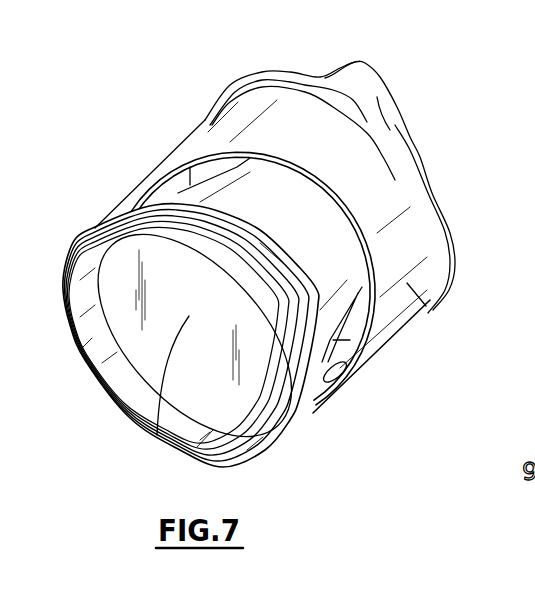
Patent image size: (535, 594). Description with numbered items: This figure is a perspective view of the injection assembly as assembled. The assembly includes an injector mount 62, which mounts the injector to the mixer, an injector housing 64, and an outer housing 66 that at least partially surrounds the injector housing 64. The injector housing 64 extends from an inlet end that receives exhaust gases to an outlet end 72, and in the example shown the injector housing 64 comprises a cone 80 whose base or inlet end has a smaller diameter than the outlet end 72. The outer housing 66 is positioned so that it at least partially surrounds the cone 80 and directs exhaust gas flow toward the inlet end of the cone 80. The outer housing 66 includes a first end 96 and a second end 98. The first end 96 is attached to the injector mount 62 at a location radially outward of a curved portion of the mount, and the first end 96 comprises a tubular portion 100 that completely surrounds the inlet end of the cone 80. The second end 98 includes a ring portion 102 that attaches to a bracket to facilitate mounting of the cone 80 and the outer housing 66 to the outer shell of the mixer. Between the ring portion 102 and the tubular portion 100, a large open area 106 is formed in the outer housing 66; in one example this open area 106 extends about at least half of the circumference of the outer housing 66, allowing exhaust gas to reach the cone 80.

The injector mount 62 is at (380, 123).
The injector housing 64 is at (333, 265).
The outer housing 66 is at (183, 142).
The outlet end 72 is at (83, 343).
The cone 80 is at (157, 435).
The first end 96 is at (380, 157).
The second end 98 is at (257, 466).
The tubular portion 100 is at (426, 306).
The ring portion 102 is at (312, 410).
The open area 106 is at (347, 353).